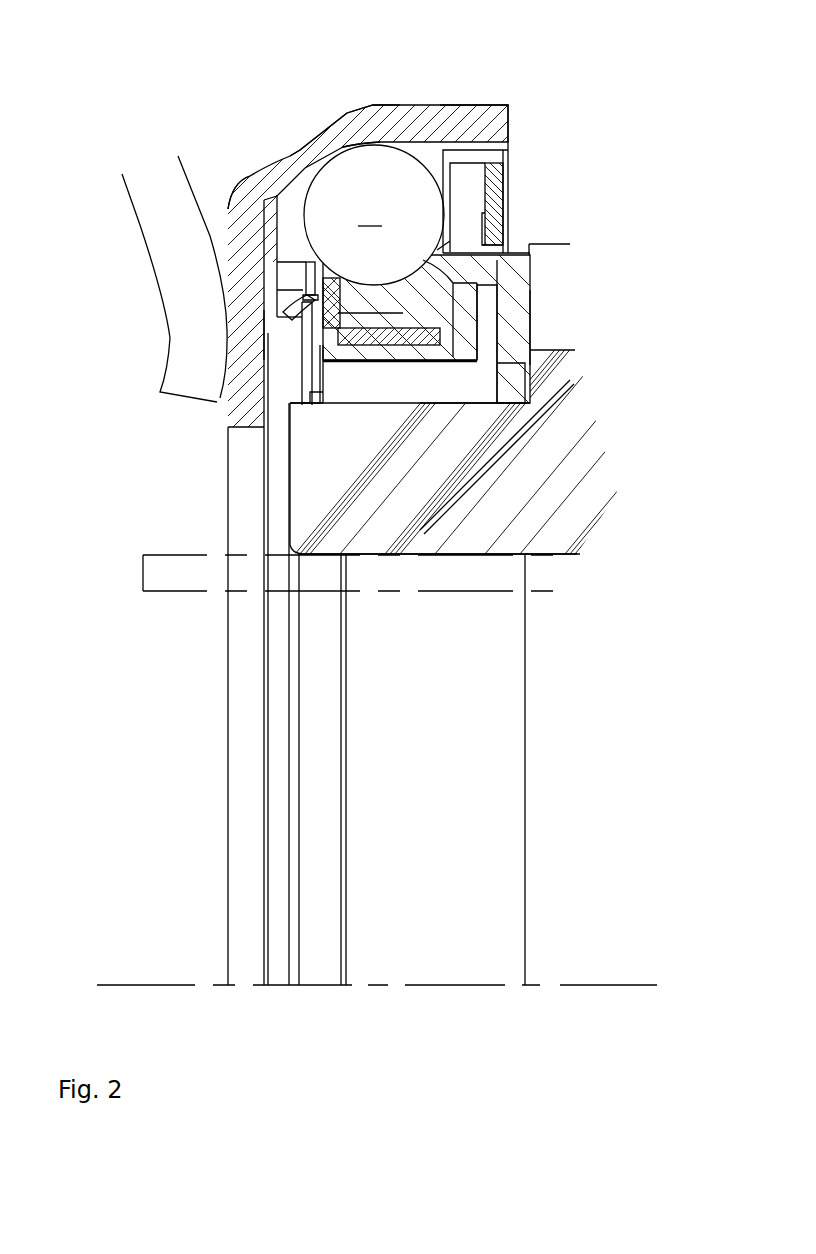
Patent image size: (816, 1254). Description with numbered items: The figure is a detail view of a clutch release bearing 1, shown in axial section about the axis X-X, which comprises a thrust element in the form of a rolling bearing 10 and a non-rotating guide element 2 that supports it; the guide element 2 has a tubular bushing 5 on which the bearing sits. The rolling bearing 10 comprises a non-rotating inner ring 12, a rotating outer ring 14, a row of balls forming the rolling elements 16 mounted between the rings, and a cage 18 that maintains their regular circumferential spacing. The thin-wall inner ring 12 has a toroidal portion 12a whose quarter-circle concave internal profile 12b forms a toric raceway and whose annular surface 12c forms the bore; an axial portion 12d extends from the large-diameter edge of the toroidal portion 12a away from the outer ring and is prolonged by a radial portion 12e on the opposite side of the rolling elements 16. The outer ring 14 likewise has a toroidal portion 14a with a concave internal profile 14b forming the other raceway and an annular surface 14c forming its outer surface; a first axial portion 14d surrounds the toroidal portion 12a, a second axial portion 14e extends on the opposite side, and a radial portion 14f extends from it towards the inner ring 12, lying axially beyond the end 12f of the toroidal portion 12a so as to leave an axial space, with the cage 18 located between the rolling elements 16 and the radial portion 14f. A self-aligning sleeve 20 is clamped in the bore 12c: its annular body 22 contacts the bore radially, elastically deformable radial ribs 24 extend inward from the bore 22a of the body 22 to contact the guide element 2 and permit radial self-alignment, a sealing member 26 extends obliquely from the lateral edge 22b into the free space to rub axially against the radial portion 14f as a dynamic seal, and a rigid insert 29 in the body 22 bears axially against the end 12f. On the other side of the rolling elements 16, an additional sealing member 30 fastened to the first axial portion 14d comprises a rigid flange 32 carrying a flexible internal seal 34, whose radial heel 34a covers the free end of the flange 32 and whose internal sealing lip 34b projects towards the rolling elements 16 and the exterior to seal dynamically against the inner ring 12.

The clutch release bearing 1 is at (533, 59).
The guide element 2 is at (262, 522).
The bushing 5 is at (347, 530).
The rolling bearing 10 is at (238, 76).
The inner ring 12 is at (535, 290).
The toroidal portion 12a is at (253, 285).
The internal profile 12b is at (540, 262).
The annular surface 12c is at (252, 305).
The axial portion 12d is at (540, 318).
The radial portion 12e is at (535, 350).
The end 12f is at (250, 258).
The outer ring 14 is at (296, 114).
The toroidal portion 14a is at (364, 105).
The internal profile 14b is at (396, 115).
The annular surface 14c is at (324, 126).
The first axial portion 14d is at (482, 118).
The second axial portion 14e is at (310, 131).
The radial portion 14f is at (245, 325).
The rolling elements 16 is at (374, 215).
The cage 18 is at (235, 205).
The self-aligning sleeve 20 is at (520, 380).
The body 22 is at (290, 445).
The bore 22a is at (440, 385).
The lateral edge 22b is at (255, 382).
The radial ribs 24 is at (290, 482).
The sealing member 26 is at (262, 372).
The insert 29 is at (264, 427).
The sealing member 30 is at (512, 133).
The flange 32 is at (512, 168).
The internal seal 34 is at (612, 175).
The radial heel 34a is at (506, 195).
The internal sealing lip 34b is at (506, 222).